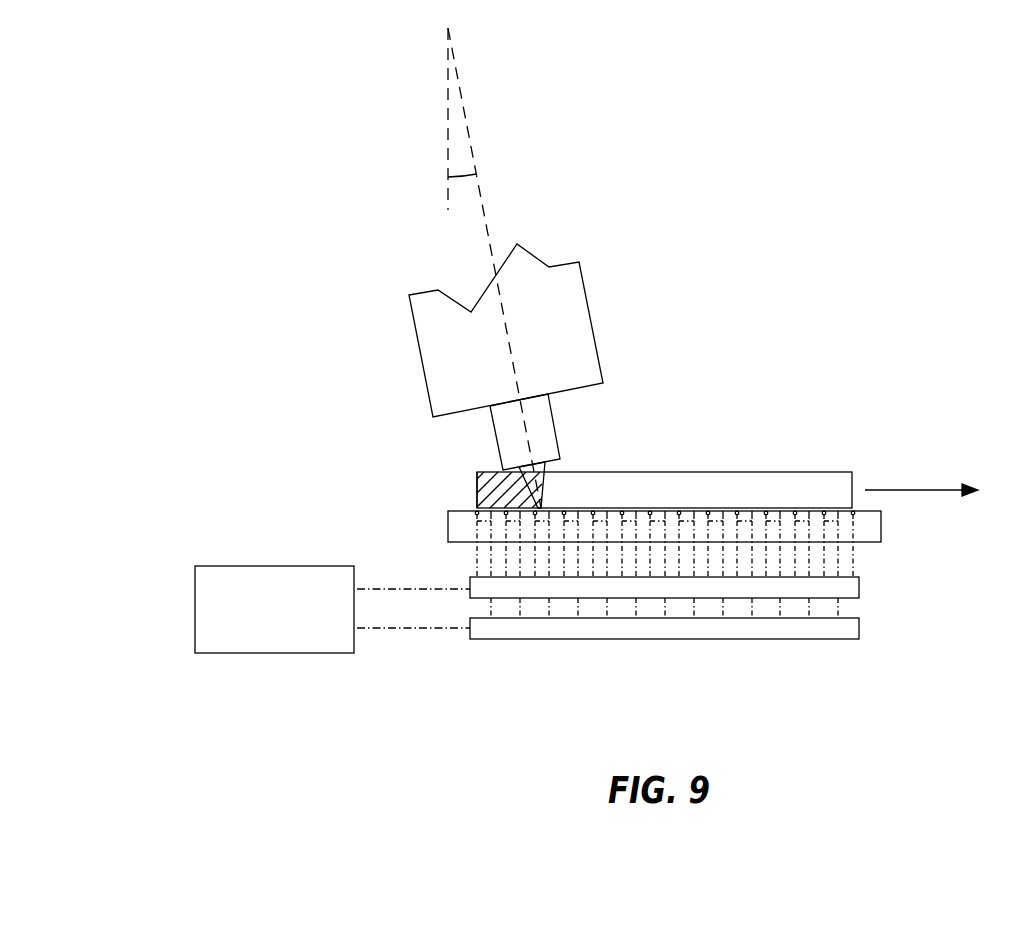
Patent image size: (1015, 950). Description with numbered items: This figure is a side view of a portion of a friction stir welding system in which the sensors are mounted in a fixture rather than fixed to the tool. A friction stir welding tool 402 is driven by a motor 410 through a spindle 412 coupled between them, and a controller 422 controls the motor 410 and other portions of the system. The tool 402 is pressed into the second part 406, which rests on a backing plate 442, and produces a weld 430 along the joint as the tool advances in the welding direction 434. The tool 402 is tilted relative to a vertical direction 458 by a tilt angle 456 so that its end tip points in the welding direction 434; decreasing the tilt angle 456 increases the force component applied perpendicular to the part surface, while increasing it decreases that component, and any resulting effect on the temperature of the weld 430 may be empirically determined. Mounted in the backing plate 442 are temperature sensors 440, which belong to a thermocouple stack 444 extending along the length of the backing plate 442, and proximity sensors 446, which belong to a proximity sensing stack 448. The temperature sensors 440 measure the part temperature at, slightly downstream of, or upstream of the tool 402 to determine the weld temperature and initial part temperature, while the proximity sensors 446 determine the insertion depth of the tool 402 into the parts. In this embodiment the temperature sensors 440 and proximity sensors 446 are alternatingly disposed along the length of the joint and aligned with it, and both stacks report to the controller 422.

The friction stir welding tool 402 is at (620, 464).
The second part 406 is at (669, 472).
The motor 410 is at (467, 330).
The spindle 412 is at (605, 443).
The controller 422 is at (310, 584).
The weld 430 is at (476, 482).
The welding direction 434 is at (940, 470).
The temperature sensors 440 is at (624, 524).
The backing plate 442 is at (709, 538).
The thermocouple stack 444 is at (709, 602).
The proximity sensors 446 is at (620, 569).
The proximity sensing stack 448 is at (709, 643).
The tilt angle 456 is at (437, 210).
The vertical direction 458 is at (447, 268).